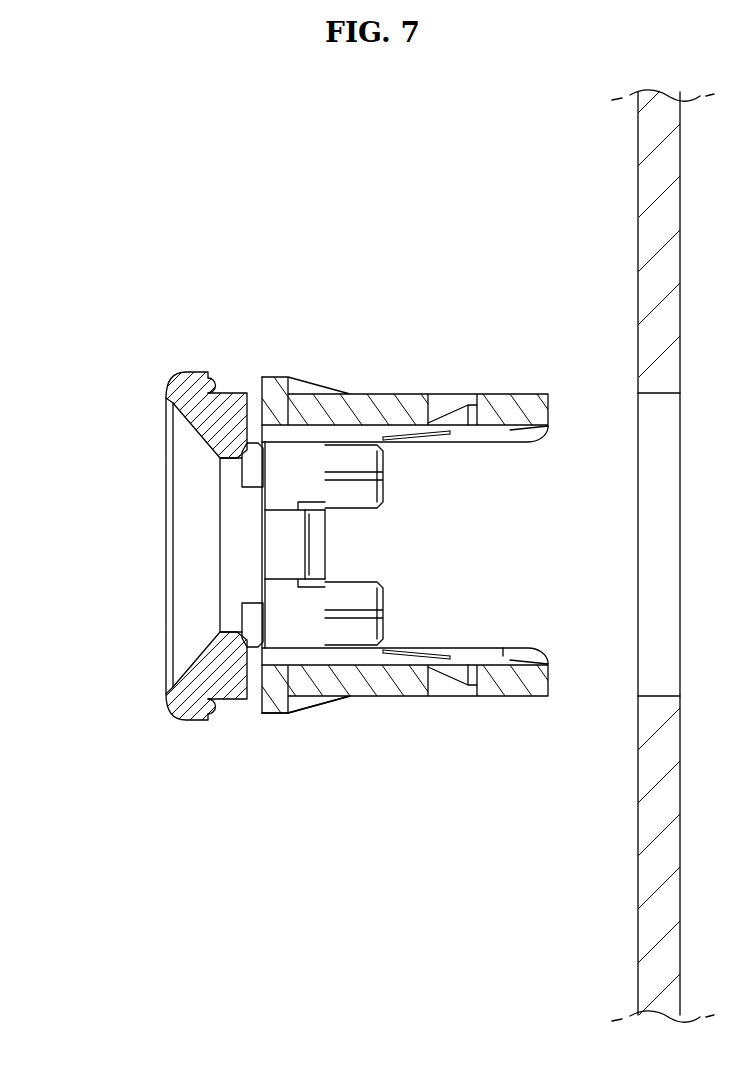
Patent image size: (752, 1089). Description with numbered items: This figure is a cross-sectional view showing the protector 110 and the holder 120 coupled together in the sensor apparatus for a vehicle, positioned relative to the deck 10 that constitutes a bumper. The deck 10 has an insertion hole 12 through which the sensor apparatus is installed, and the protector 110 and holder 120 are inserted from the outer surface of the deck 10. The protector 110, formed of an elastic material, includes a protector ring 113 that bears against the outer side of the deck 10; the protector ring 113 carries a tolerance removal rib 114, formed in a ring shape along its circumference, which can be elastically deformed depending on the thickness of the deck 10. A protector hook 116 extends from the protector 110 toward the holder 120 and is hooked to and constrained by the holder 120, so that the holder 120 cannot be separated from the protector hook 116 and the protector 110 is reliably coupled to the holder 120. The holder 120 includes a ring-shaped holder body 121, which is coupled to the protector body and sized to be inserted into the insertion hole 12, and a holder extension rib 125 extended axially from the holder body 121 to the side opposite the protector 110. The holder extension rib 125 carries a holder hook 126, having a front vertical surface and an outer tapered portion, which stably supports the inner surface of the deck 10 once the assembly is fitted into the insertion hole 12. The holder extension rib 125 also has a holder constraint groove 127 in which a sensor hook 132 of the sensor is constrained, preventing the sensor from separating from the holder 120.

The deck 10 is at (660, 152).
The insertion hole 12 is at (653, 433).
The protector 110 is at (183, 507).
The protector ring 113 is at (167, 378).
The tolerance removal rib 114 is at (212, 372).
The protector hook 116 is at (327, 546).
The holder 120 is at (395, 561).
The holder body 121 is at (297, 618).
The holder extension rib 125 is at (517, 692).
The holder hook 126 is at (275, 712).
The holder constraint groove 127 is at (437, 686).
The sensor hook 132 is at (460, 407).